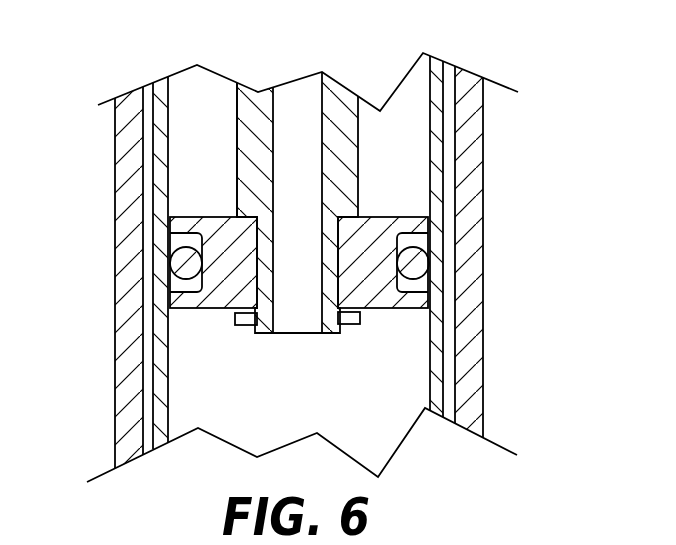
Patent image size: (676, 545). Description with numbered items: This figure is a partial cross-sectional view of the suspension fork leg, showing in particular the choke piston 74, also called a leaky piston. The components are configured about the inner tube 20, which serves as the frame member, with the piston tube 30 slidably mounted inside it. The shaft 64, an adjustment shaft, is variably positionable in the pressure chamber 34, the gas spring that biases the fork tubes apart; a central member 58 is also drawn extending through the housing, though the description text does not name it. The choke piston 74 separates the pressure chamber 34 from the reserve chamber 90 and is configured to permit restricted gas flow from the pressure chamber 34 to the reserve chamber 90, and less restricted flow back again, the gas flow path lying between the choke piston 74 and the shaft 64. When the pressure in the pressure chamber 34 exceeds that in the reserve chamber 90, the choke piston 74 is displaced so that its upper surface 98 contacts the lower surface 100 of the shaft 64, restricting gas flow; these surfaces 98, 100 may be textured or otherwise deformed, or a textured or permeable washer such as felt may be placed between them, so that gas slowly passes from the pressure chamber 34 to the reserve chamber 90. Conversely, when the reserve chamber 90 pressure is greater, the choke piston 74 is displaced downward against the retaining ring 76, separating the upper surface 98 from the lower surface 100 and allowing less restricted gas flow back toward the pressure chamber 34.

The inner tube 20 is at (128, 188).
The piston tube 30 is at (162, 372).
The pressure chamber 34 is at (403, 397).
The shaft 58 is at (298, 100).
The shaft 64 is at (343, 120).
The choke piston 74 is at (428, 296).
The retaining ring 76 is at (362, 312).
The reserve chamber 90 is at (412, 145).
The upper surface 98 is at (205, 210).
The lower surface 100 is at (253, 197).